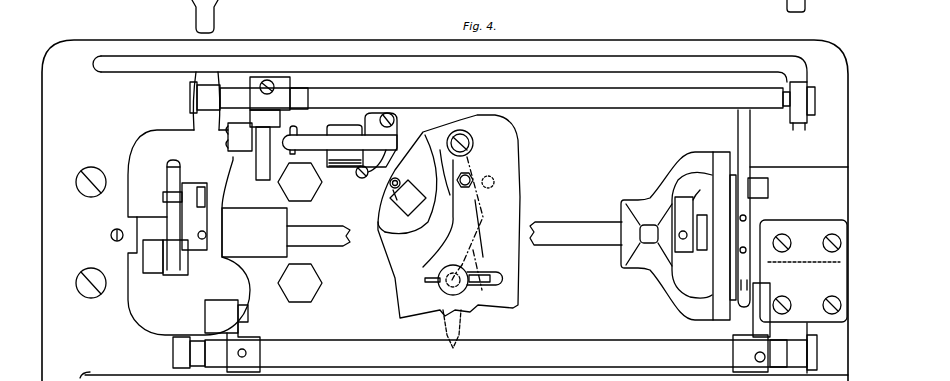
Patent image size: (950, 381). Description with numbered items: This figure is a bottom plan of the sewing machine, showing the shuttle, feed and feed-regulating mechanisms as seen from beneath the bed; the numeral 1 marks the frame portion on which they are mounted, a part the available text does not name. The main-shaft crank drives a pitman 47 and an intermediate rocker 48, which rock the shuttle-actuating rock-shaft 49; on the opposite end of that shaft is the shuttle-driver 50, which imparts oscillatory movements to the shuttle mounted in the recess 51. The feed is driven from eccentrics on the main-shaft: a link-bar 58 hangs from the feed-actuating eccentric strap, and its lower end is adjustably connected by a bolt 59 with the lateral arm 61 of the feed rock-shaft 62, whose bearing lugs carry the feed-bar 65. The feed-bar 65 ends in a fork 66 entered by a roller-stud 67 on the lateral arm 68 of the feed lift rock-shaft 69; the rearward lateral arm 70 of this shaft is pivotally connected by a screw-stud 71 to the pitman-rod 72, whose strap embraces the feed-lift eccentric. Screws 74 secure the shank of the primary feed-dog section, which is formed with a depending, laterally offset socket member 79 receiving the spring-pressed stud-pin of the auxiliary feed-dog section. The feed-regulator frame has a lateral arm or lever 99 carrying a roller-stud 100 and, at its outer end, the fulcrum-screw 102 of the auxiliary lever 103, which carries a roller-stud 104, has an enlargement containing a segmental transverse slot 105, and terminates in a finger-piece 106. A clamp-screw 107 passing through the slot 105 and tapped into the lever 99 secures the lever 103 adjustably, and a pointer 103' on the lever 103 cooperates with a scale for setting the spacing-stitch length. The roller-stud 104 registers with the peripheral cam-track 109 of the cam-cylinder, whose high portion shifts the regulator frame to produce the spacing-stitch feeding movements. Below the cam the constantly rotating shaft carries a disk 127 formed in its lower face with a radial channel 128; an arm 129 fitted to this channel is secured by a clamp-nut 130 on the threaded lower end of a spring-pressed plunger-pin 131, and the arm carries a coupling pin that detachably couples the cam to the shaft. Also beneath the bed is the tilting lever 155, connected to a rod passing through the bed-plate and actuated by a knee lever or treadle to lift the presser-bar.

The housing frame 1 is at (445, 190).
The pitman 47 is at (155, 264).
The intermediate rocker 48 is at (170, 210).
The shuttle-actuating rock-shaft 49 is at (582, 232).
The shuttle-driver 50 is at (702, 191).
The recess 51 is at (723, 163).
The link-bar 58 is at (240, 137).
The bolt 59 is at (227, 148).
The lateral arm 61 is at (261, 173).
The feed rock-shaft 62 is at (502, 106).
The feed-bar 65 is at (747, 152).
The fork 66 is at (758, 290).
The roller-stud 67 is at (752, 300).
The lateral arm 68 is at (765, 331).
The feed lift rock-shaft 69 is at (495, 352).
The lateral arm 70 is at (242, 346).
The screw-stud 71 is at (246, 311).
The pitman-rod 72 is at (221, 316).
The screws 74 is at (747, 218).
The socket member 79 is at (768, 190).
The lateral arm or lever 99 is at (477, 190).
The roller-stud 100 is at (492, 186).
The fulcrum-screw 102 is at (457, 136).
The lever 103 is at (467, 218).
The pointer 103' is at (484, 287).
The roller-stud 104 is at (454, 158).
The segmental transverse slot 105 is at (497, 286).
The finger-piece 106 is at (443, 322).
The clamp-screw 107 is at (440, 290).
The cam-track 109 is at (403, 232).
The disk 127 is at (449, 216).
The radial channel 128 is at (408, 198).
The arm 129 is at (400, 205).
The clamp-nut 130 is at (392, 187).
The plunger-pin 131 is at (390, 184).
The tilting lever 155 is at (312, 140).